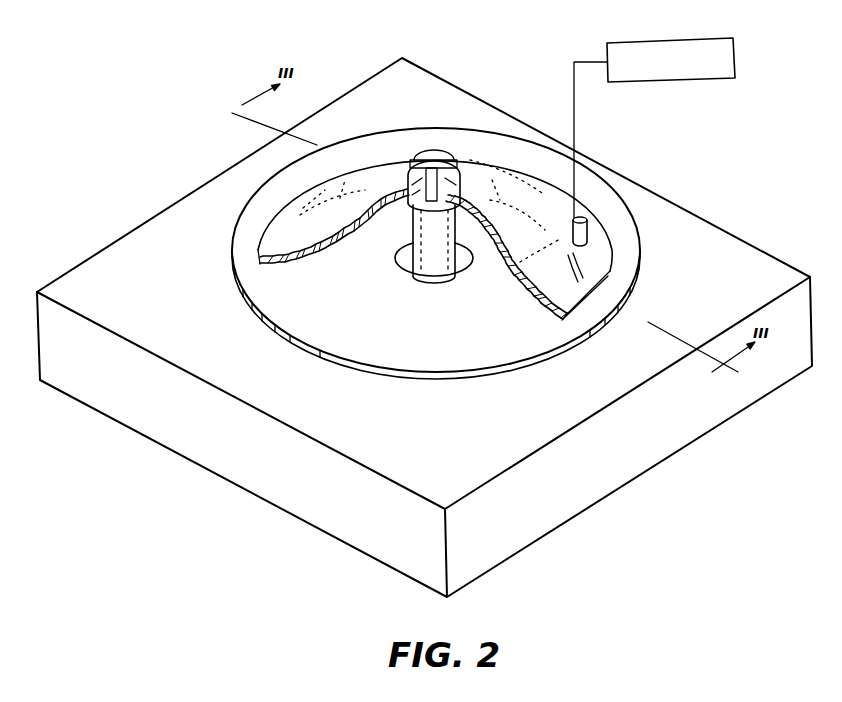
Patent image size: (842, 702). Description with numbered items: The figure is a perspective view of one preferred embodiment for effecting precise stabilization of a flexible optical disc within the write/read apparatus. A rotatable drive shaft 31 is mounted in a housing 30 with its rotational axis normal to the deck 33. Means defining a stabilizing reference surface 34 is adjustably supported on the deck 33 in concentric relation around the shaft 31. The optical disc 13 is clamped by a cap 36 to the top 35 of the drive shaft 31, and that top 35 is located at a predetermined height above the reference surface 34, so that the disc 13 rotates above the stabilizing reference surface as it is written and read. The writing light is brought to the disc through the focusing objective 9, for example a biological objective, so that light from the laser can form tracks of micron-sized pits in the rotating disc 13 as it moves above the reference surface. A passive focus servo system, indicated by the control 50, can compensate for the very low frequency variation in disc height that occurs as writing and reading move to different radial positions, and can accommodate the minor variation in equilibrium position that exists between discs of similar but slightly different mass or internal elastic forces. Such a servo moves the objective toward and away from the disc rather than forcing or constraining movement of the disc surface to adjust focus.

The focusing objective 9 is at (588, 228).
The optical disc 13 is at (592, 263).
The housing 30 is at (424, 327).
The drive shaft 31 is at (456, 268).
The deck 33 is at (121, 294).
The stabilizing reference surface 34 is at (290, 330).
The top of the drive shaft 35 is at (404, 207).
The cap 36 is at (416, 152).
The focus servo system 50 is at (725, 41).